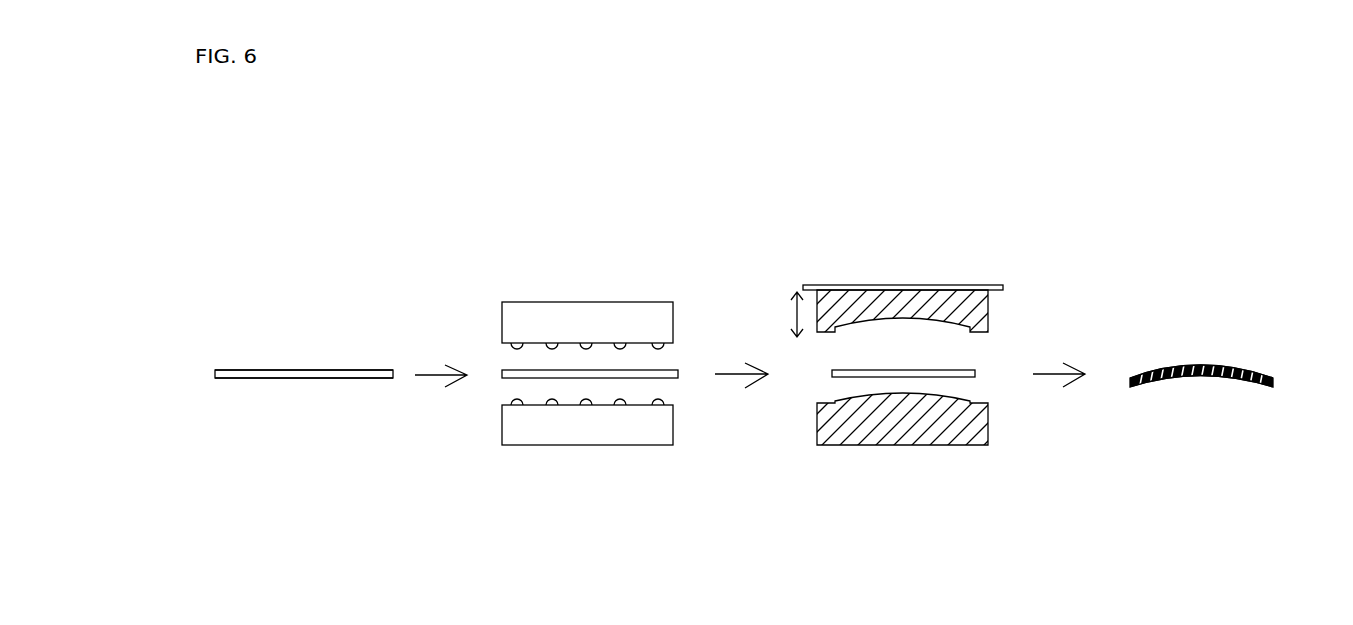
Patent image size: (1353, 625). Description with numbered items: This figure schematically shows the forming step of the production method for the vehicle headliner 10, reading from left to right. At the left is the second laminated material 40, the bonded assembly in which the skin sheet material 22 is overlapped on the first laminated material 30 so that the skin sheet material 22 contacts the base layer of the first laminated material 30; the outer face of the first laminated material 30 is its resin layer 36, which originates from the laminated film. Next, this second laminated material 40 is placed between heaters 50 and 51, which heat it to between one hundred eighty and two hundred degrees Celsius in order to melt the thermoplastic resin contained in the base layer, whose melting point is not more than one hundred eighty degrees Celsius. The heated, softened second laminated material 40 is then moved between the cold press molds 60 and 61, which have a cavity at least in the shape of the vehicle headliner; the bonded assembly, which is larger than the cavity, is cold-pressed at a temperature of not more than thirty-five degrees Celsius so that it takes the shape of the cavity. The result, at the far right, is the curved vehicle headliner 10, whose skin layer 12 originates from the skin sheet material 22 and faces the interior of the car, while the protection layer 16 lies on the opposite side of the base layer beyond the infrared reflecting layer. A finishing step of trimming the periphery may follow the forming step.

The vehicle headliner 10 is at (1201, 352).
The skin layer 12 is at (1187, 377).
The protection layer 16 is at (1172, 365).
The skin sheet material 22 is at (372, 378).
The first laminated material 30 is at (329, 318).
The resin layer 36 is at (350, 370).
The second laminated material 40 is at (259, 329).
The heater 50 is at (625, 302).
The heater 51 is at (592, 445).
The cold press mold 60 is at (973, 312).
The cold press mold 61 is at (968, 432).